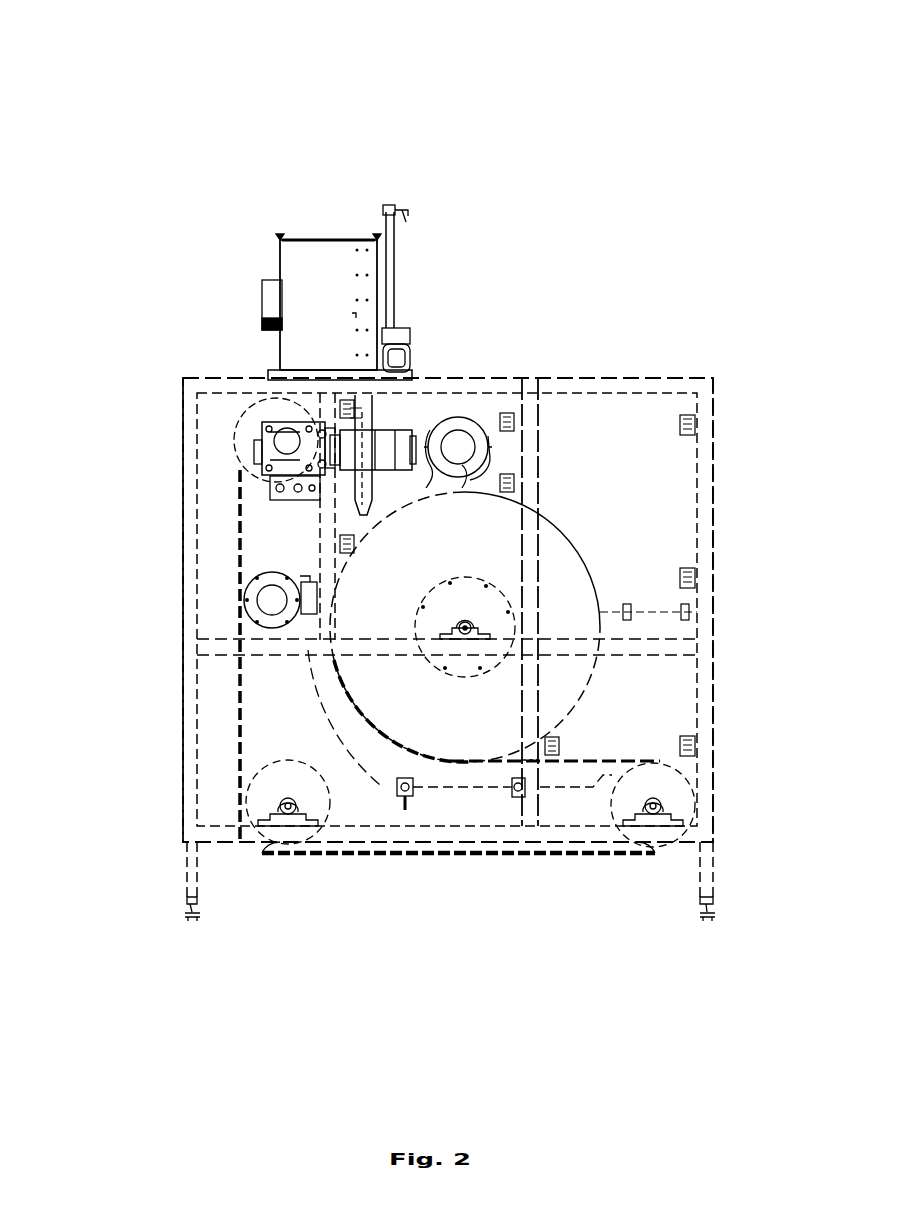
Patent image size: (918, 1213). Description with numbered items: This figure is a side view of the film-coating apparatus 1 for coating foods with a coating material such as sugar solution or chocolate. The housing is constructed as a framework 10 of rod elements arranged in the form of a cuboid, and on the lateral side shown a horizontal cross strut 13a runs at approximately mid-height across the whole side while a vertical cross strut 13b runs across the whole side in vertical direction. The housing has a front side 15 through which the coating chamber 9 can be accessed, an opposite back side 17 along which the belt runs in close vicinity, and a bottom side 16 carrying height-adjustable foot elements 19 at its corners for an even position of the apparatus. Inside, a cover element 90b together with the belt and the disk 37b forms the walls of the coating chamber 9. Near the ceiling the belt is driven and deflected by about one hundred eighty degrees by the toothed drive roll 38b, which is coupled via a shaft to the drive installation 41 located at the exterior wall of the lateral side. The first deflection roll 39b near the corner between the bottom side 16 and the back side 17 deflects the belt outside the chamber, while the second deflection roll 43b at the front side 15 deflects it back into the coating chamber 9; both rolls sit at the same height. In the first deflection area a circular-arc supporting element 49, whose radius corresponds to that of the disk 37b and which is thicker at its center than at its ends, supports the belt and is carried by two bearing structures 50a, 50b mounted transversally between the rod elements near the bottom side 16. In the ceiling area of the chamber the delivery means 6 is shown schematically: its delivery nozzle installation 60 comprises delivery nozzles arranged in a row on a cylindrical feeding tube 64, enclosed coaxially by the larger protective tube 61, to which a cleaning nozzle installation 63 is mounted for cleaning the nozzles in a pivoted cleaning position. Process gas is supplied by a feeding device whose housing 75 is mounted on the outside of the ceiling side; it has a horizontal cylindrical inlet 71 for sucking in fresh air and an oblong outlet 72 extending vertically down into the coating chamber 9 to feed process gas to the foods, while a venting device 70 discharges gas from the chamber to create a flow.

The film-coating apparatus 1 is at (623, 197).
The delivery means 6 is at (443, 406).
The coating chamber 9 is at (586, 477).
The framework 10 is at (637, 392).
The horizontal cross strut 13a is at (404, 652).
The vertical cross strut 13b is at (532, 778).
The front side 15 is at (717, 572).
The bottom side 16 is at (276, 860).
The back side 17 is at (174, 656).
The foot elements 19 is at (193, 915).
The disk 37b is at (563, 687).
The drive roll 38b is at (250, 436).
The first deflection roll 39b is at (290, 805).
The drive installation 41 is at (313, 452).
The second deflection roll 43b is at (627, 798).
The supporting element 49 is at (347, 707).
The bearing structure 50a is at (408, 800).
The bearing structure 50b is at (518, 800).
The delivery nozzle installation 60 is at (458, 445).
The protective tube 61 is at (490, 455).
The cleaning nozzle installation 63 is at (427, 476).
The feeding tube 64 is at (462, 482).
The venting device 70 is at (252, 600).
The inlet 71 is at (270, 290).
The outlet 72 is at (365, 440).
The housing of the feeding device 75 is at (332, 240).
The cover element 90b is at (602, 493).